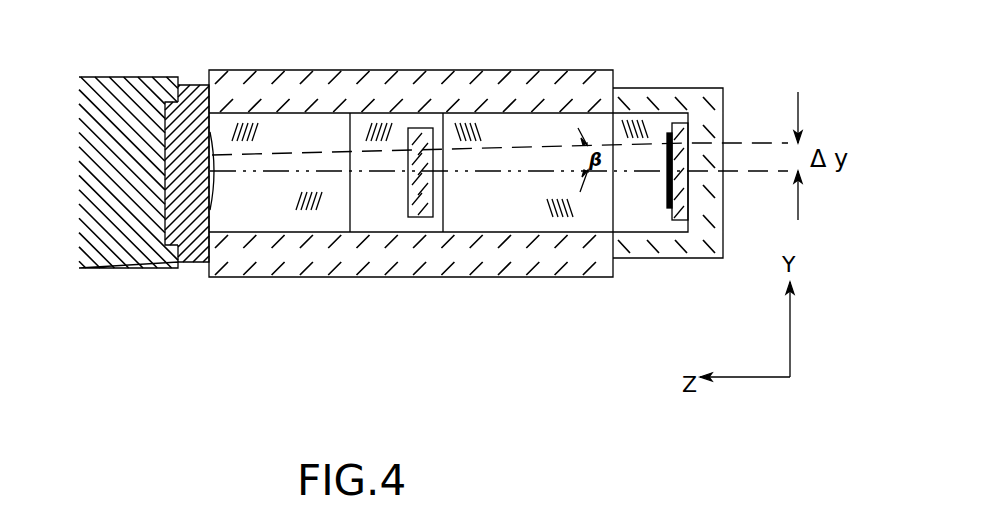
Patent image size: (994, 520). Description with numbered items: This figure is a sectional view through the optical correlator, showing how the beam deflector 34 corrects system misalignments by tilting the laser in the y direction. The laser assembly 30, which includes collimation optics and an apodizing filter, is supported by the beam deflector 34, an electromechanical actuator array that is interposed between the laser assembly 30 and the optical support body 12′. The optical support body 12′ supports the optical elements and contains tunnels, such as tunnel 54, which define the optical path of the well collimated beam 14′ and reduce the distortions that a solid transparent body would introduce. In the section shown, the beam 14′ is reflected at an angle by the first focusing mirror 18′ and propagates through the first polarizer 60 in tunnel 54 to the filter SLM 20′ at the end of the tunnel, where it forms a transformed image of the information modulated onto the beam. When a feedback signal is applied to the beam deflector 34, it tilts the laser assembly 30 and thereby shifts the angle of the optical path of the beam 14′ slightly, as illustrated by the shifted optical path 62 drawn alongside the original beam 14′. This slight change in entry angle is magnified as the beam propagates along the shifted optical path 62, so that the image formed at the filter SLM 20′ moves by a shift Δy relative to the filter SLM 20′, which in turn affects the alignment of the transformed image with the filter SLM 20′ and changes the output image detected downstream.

The optical support body 12′ is at (405, 277).
The beam 14′ is at (485, 172).
The first focusing mirror 18' is at (235, 181).
The filter SLM 20' is at (667, 135).
The laser assembly 30 is at (123, 267).
The beam deflector 34 is at (195, 262).
The tunnel 54 is at (580, 232).
The first polarizer 60 is at (410, 183).
The shifted optical path 62 is at (342, 152).